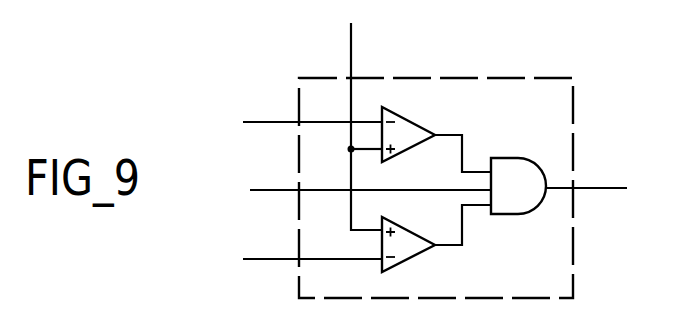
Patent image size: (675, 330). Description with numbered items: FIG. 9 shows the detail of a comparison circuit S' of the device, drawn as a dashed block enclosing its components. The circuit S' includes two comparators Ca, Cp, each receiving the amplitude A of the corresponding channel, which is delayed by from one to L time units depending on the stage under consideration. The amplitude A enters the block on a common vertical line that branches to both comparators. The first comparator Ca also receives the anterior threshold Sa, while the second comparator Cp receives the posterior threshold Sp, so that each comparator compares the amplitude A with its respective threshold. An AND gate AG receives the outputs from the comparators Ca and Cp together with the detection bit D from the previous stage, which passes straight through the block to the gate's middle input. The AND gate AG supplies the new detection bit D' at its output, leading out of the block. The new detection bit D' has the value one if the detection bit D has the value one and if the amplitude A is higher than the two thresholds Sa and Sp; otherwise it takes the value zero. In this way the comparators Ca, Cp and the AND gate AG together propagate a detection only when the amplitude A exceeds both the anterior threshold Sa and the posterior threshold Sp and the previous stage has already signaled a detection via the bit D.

The selection circuit block S' is at (436, 163).
The amplitude A is at (365, 126).
The anterior threshold Sa is at (312, 108).
The detection bit D is at (370, 177).
The posterior threshold Sp is at (312, 245).
The comparator Ca is at (410, 119).
The comparator Cp is at (410, 262).
The AND gate AG is at (509, 215).
The new detection bit D' is at (586, 173).